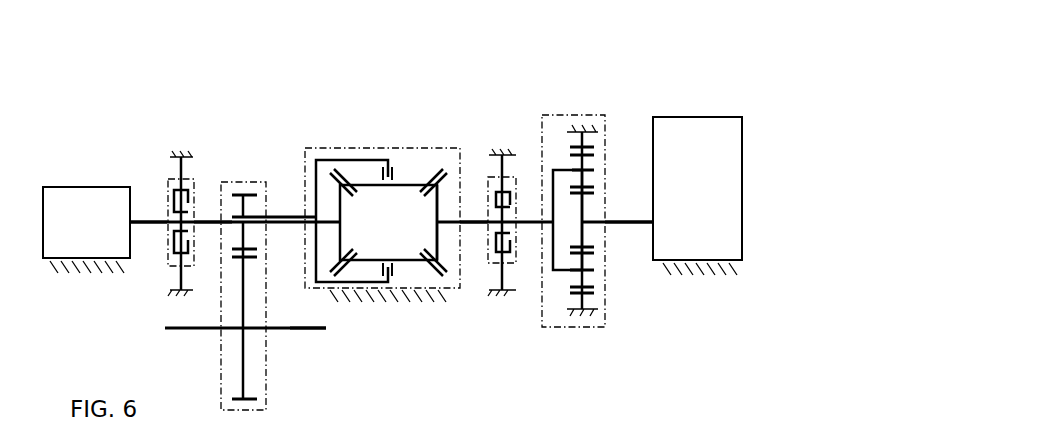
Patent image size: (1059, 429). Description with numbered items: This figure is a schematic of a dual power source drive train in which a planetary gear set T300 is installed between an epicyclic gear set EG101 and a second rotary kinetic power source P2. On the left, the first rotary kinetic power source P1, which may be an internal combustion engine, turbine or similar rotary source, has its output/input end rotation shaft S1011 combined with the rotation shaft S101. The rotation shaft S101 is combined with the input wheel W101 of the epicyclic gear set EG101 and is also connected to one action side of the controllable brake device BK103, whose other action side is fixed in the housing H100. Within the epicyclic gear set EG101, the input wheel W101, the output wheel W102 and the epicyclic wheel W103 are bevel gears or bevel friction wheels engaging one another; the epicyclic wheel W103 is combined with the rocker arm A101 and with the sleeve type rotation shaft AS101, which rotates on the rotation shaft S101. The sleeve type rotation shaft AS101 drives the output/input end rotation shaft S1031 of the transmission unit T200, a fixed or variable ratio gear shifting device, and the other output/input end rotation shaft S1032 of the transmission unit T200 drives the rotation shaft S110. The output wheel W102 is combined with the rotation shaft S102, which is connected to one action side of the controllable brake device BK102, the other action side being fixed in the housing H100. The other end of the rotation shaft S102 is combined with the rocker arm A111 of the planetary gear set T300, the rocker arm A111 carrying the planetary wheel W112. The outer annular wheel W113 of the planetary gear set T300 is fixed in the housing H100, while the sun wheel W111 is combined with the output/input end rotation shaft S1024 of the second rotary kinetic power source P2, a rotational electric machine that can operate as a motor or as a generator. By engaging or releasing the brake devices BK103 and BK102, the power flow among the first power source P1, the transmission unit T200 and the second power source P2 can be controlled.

The first rotary kinetic power source P1 is at (86, 230).
The second rotary kinetic power source P2 is at (697, 196).
The output/input end rotation shaft of the first rotary kinetic power source S1011 is at (132, 230).
The controllable brake device BK103 is at (168, 190).
The housing H100 is at (178, 155).
The rotation shaft S101 is at (210, 220).
The output/input end rotation shaft of the transmission unit S1031 is at (260, 207).
The sleeve type rotation shaft AS101 is at (287, 217).
The output/input end rotation shaft of the transmission unit S1032 is at (247, 330).
The transmission unit T200 is at (215, 347).
The rotation shaft S110 is at (293, 330).
The epicyclic gear set EG101 is at (378, 148).
The rocker arm A101 is at (347, 160).
The input wheel W101 is at (372, 222).
The output wheel W102 is at (436, 203).
The epicyclic wheel W103 is at (433, 178).
The rotation shaft S102 is at (478, 218).
The controllable brake device BK102 is at (522, 190).
The rocker arm A111 is at (552, 258).
The planetary gear set T300 is at (556, 113).
The sun wheel W111 is at (585, 200).
The planetary wheel W112 is at (594, 287).
The outer annular wheel W113 is at (568, 293).
The output/input end rotation shaft of the second rotary kinetic power source S1024 is at (645, 226).